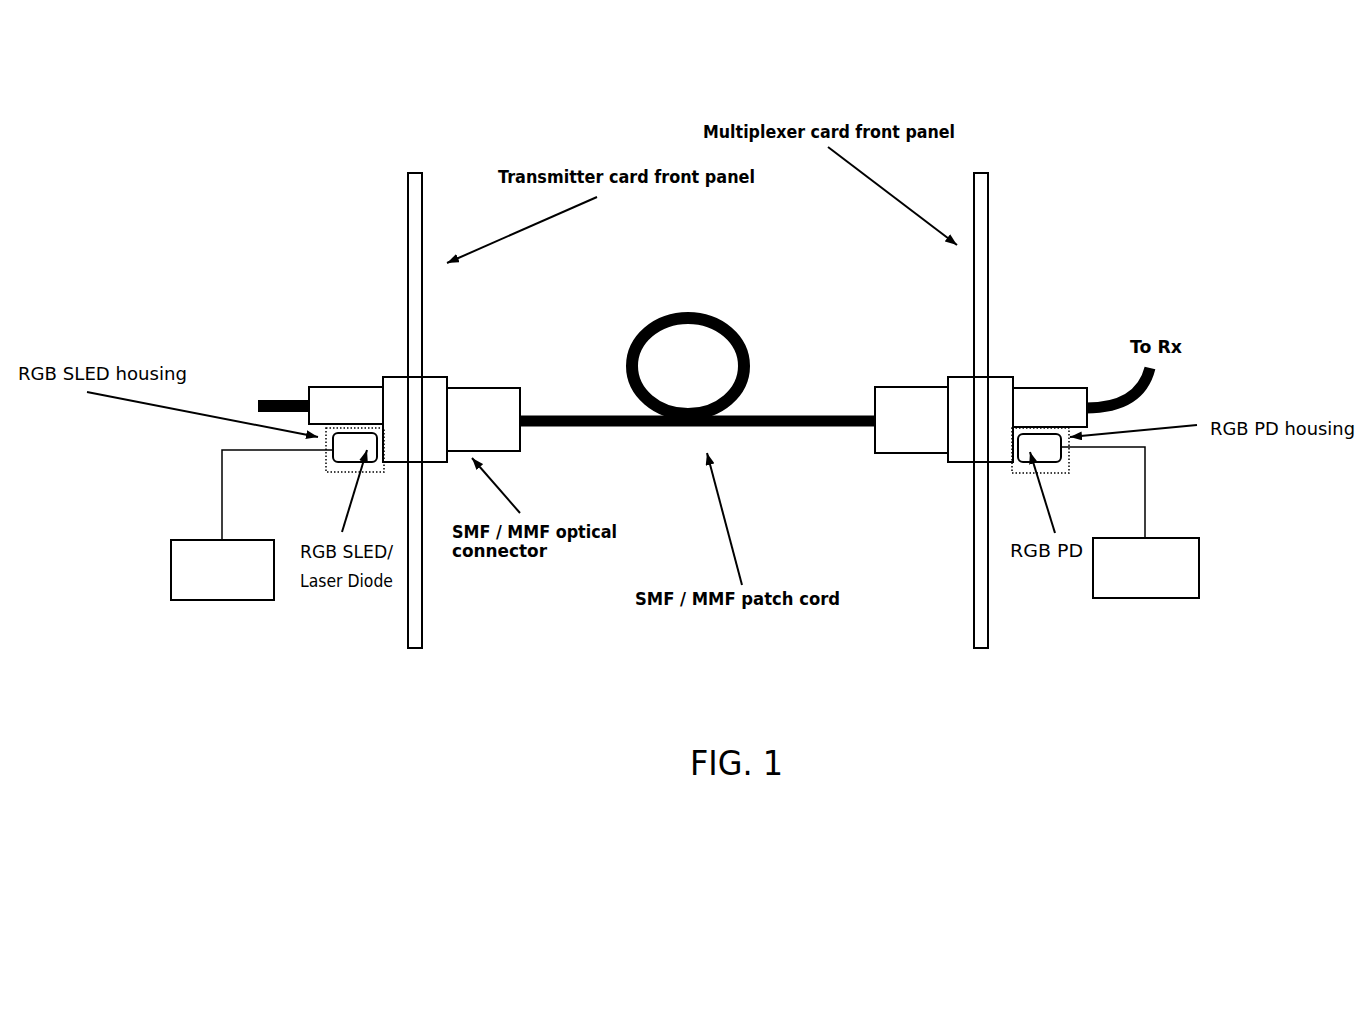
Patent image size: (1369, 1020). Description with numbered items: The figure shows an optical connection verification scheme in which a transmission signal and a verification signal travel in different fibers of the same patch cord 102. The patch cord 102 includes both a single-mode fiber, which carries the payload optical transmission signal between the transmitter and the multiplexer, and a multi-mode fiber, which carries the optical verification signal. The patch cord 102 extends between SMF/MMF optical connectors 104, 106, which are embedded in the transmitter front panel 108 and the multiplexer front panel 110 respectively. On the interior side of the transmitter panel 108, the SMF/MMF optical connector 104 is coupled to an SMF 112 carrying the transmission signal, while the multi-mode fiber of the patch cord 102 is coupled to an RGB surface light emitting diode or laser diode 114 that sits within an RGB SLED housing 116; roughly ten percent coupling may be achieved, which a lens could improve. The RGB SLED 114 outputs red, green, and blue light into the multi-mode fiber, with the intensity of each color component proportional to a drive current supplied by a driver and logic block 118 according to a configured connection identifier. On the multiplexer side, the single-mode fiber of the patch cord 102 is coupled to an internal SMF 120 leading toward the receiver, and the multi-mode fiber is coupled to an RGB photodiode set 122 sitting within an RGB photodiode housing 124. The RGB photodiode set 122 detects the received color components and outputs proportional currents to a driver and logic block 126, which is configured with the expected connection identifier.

The patch cord 102 is at (782, 415).
The SMF/MMF optical connector 104 is at (470, 391).
The SMF/MMF optical connector 106 is at (898, 392).
The transmitter front panel 108 is at (422, 206).
The multiplexer front panel 110 is at (988, 195).
The SMF 112 is at (273, 401).
The RGB surface light emitting diode or laser diode 114 is at (340, 461).
The RGB SLED housing 116 is at (333, 432).
The driver and logic block 118 is at (228, 542).
The internal SMF 120 is at (1152, 377).
The RGB photodiode set 122 is at (1023, 460).
The RGB photodiode housing 124 is at (1063, 420).
The driver and logic block 126 is at (1165, 542).